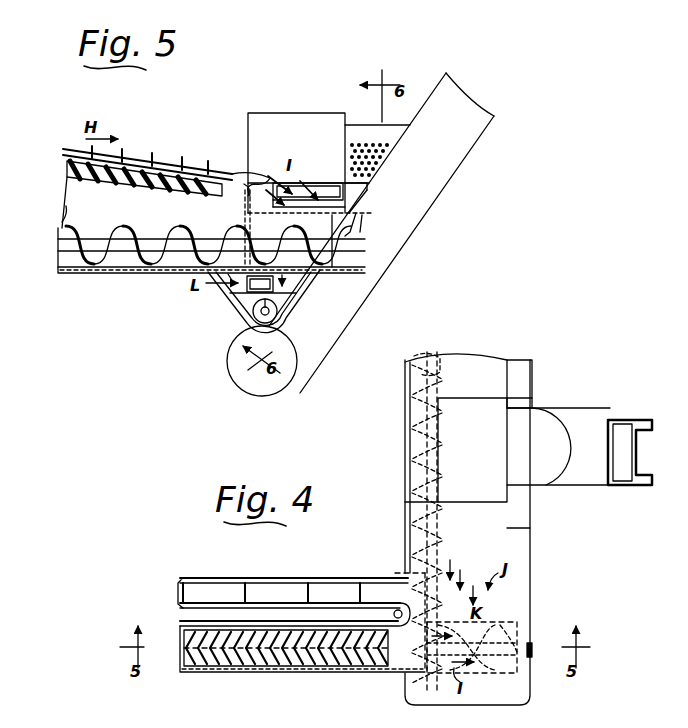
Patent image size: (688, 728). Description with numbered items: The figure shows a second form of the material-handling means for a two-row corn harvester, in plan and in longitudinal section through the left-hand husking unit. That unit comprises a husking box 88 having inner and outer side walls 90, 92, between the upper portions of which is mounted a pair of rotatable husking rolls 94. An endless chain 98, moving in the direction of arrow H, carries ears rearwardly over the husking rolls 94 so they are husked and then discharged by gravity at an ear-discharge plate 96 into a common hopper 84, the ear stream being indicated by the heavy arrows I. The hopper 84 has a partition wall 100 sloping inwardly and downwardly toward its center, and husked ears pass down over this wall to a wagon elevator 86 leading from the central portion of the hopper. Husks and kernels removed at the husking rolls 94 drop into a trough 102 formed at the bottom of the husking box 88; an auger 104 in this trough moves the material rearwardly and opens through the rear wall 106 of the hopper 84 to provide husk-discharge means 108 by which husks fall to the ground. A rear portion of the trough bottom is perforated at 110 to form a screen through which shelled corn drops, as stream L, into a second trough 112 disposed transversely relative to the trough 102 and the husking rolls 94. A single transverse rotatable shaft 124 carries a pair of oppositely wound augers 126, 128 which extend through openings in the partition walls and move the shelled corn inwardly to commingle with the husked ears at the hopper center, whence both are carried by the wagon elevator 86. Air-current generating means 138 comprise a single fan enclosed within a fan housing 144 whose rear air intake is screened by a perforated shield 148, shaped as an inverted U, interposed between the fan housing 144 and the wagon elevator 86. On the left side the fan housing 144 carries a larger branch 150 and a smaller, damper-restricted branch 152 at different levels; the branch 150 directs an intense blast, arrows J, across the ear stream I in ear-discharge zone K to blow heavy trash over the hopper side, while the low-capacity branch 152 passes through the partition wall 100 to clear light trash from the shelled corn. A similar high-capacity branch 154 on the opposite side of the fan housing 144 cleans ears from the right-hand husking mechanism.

In FIG. 5, the hopper 84 is at (216, 288).
In FIG. 4, the hopper 84 is at (534, 577).
In FIG. 5, the wagon elevator 86 is at (436, 190).
In FIG. 4, the wagon elevator 86 is at (600, 425).
In FIG. 5, the husking box 88 is at (64, 193).
In FIG. 4, the husking box 88 is at (176, 591).
In FIG. 5, the inner side wall 90 is at (64, 215).
In FIG. 4, the inner side wall 90 is at (240, 572).
In FIG. 4, the outer side wall 92 is at (223, 674).
In FIG. 5, the husking rolls 94 is at (68, 170).
In FIG. 4, the husking rolls 94 is at (184, 634).
In FIG. 5, the plate 96 is at (257, 182).
In FIG. 4, the plate 96 is at (408, 668).
In FIG. 5, the endless chain 98 is at (166, 170).
In FIG. 4, the endless chain 98 is at (264, 603).
In FIG. 5, the partition wall 100 is at (354, 213).
In FIG. 4, the partition wall 100 is at (488, 702).
In FIG. 5, the trough 102 is at (65, 270).
In FIG. 5, the auger 104 is at (106, 235).
In FIG. 4, the auger 104 is at (302, 652).
In FIG. 5, the rear wall 106 is at (366, 219).
In FIG. 5, the husk-discharge means 108 is at (354, 266).
In FIG. 4, the husk-discharge means 108 is at (533, 662).
In FIG. 5, the perforated bottom 110 is at (296, 280).
In FIG. 5, the trough 112 is at (240, 304).
In FIG. 5, the transverse rotatable shaft 124 is at (269, 319).
In FIG. 4, the transverse rotatable shaft 124 is at (430, 441).
In FIG. 5, the auger 126 is at (277, 313).
In FIG. 4, the auger 126 is at (430, 533).
In FIG. 4, the auger 128 is at (452, 372).
In FIG. 5, the means for generating air-currents 138 is at (302, 113).
In FIG. 4, the means for generating air-currents 138 is at (478, 398).
In FIG. 5, the fan housing 144 is at (248, 122).
In FIG. 4, the fan housing 144 is at (508, 398).
In FIG. 5, the perforated shield 148 is at (392, 134).
In FIG. 4, the perforated shield 148 is at (545, 417).
In FIG. 5, the air-current directing branch 150 is at (312, 183).
In FIG. 4, the air-current directing branch 150 is at (503, 530).
In FIG. 5, the air-current directing branch 152 is at (226, 300).
In FIG. 4, the high-capacity branch 154 is at (516, 360).